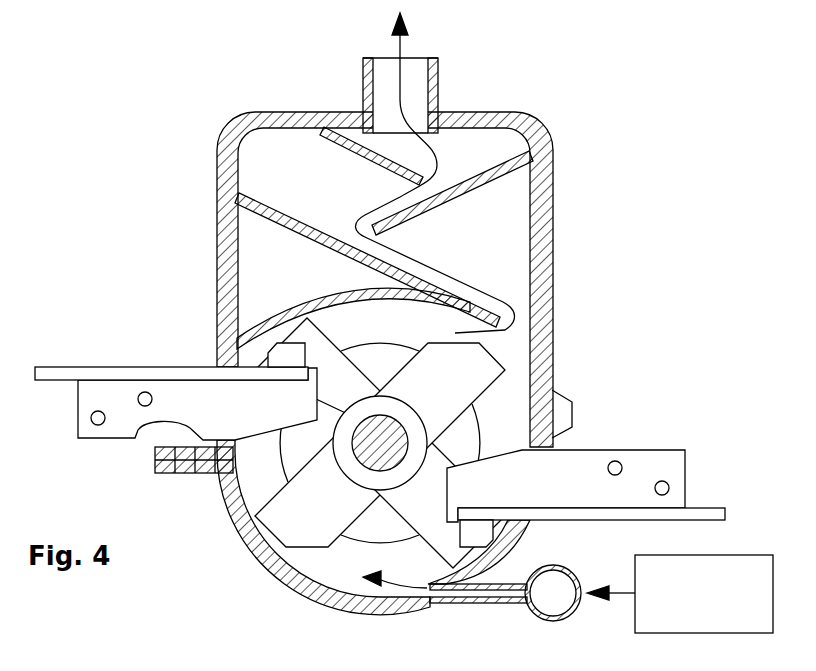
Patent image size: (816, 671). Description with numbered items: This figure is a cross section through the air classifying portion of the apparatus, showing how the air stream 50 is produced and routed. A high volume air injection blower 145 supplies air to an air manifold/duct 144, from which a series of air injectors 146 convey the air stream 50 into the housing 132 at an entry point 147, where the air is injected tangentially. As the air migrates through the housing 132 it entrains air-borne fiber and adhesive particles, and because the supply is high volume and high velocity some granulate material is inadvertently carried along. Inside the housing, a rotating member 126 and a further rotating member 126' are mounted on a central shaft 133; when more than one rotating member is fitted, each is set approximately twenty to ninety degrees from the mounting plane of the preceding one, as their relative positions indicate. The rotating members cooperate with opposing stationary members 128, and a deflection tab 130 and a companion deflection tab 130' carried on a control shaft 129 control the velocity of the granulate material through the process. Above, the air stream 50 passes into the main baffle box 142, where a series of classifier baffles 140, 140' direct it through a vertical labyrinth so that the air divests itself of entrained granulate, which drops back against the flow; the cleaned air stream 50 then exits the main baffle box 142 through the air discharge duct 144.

The air stream 50 is at (401, 53).
The air discharge duct 144 is at (438, 100).
The classifier baffle 140 is at (365, 156).
The classifier baffle 140' is at (384, 250).
The main baffle box 142 is at (555, 214).
The rotating member 126 is at (380, 438).
The rotating member 126' is at (429, 406).
The deflection tab 130 is at (273, 379).
The deflection tab 130' is at (489, 512).
The stationary member 128 is at (113, 440).
The control shaft 129 is at (713, 509).
The central shaft 133 is at (352, 462).
The housing 132 is at (287, 587).
The air injector 146 is at (488, 604).
The entry point 147 is at (402, 590).
The air injection blower 145 is at (680, 633).